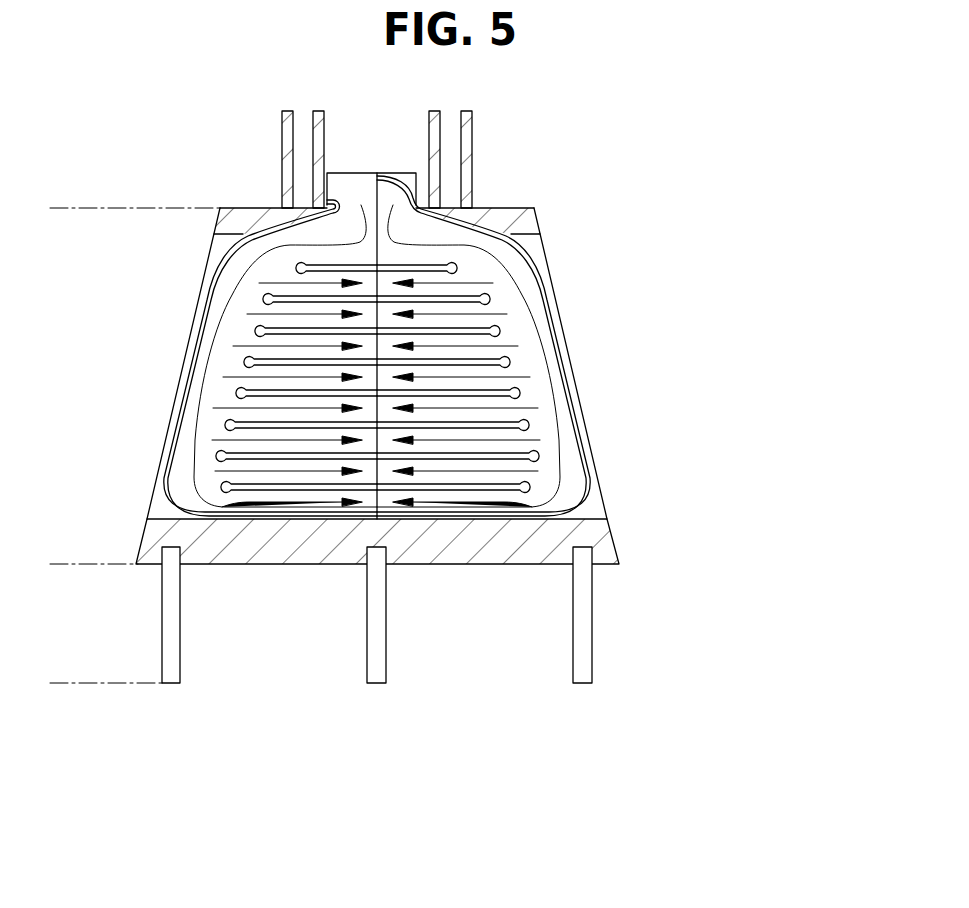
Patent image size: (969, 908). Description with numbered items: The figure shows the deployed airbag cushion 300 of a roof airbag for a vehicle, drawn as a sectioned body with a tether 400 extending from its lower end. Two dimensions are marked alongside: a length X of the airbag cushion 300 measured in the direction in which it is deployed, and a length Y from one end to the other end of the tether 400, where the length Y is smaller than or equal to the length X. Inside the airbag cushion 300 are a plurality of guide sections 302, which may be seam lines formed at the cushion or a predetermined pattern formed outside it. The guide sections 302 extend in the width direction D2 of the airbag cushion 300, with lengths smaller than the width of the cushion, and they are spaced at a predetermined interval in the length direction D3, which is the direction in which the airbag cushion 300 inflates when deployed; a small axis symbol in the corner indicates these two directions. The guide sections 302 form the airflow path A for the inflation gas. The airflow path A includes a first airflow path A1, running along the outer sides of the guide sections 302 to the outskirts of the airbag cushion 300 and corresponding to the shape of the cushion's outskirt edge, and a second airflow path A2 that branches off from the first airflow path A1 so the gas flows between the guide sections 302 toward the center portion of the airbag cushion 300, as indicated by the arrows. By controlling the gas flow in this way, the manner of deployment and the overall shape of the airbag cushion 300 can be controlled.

The airbag cushion 300 is at (530, 262).
The guide sections 302 is at (480, 452).
The tether 400 is at (172, 668).
The airflow path A is at (738, 323).
The first airflow path A1 is at (557, 417).
The second airflow path A2 is at (500, 345).
The length of the airbag cushion X is at (58, 220).
The length of the tether Y is at (58, 576).
The width direction D2 is at (687, 747).
The length direction D3 is at (753, 814).